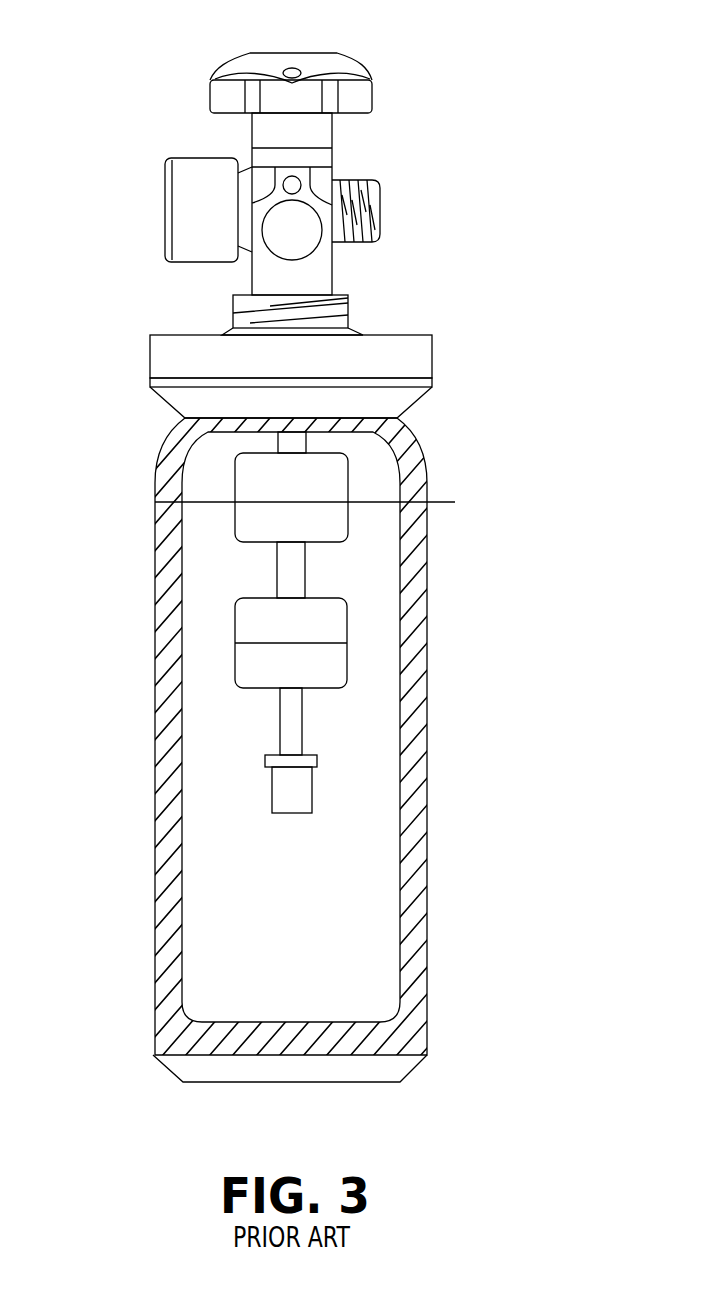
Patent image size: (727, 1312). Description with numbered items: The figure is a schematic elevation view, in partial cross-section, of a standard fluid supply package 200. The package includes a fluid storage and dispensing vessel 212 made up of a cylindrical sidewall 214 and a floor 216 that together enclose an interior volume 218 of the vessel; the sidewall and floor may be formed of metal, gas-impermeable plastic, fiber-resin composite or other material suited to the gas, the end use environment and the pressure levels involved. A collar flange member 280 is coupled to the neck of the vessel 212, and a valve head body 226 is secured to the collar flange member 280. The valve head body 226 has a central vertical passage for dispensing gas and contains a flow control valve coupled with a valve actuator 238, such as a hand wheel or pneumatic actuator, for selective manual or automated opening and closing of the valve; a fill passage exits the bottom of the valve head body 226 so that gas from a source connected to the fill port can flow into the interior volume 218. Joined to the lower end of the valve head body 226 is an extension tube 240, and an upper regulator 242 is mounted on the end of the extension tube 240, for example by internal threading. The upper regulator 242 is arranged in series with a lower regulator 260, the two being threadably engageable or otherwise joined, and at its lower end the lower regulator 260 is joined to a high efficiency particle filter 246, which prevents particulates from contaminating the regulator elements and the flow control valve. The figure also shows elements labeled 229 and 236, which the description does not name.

The fluid supply package 200 is at (475, 313).
The fluid storage and dispensing vessel 212 is at (415, 1017).
The cylindrical sidewall 214 is at (155, 740).
The floor 216 is at (300, 1082).
The interior volume 218 is at (240, 952).
The valve head body 226 is at (322, 265).
The outlet fitting 229 is at (380, 208).
The pressure gauge 236 is at (162, 215).
The valve actuator 238 is at (353, 76).
The extension tube 240 is at (293, 443).
The upper regulator 242 is at (323, 477).
The high efficiency particle filter 246 is at (302, 785).
The lower regulator 260 is at (332, 618).
The collar flange member 280 is at (165, 357).